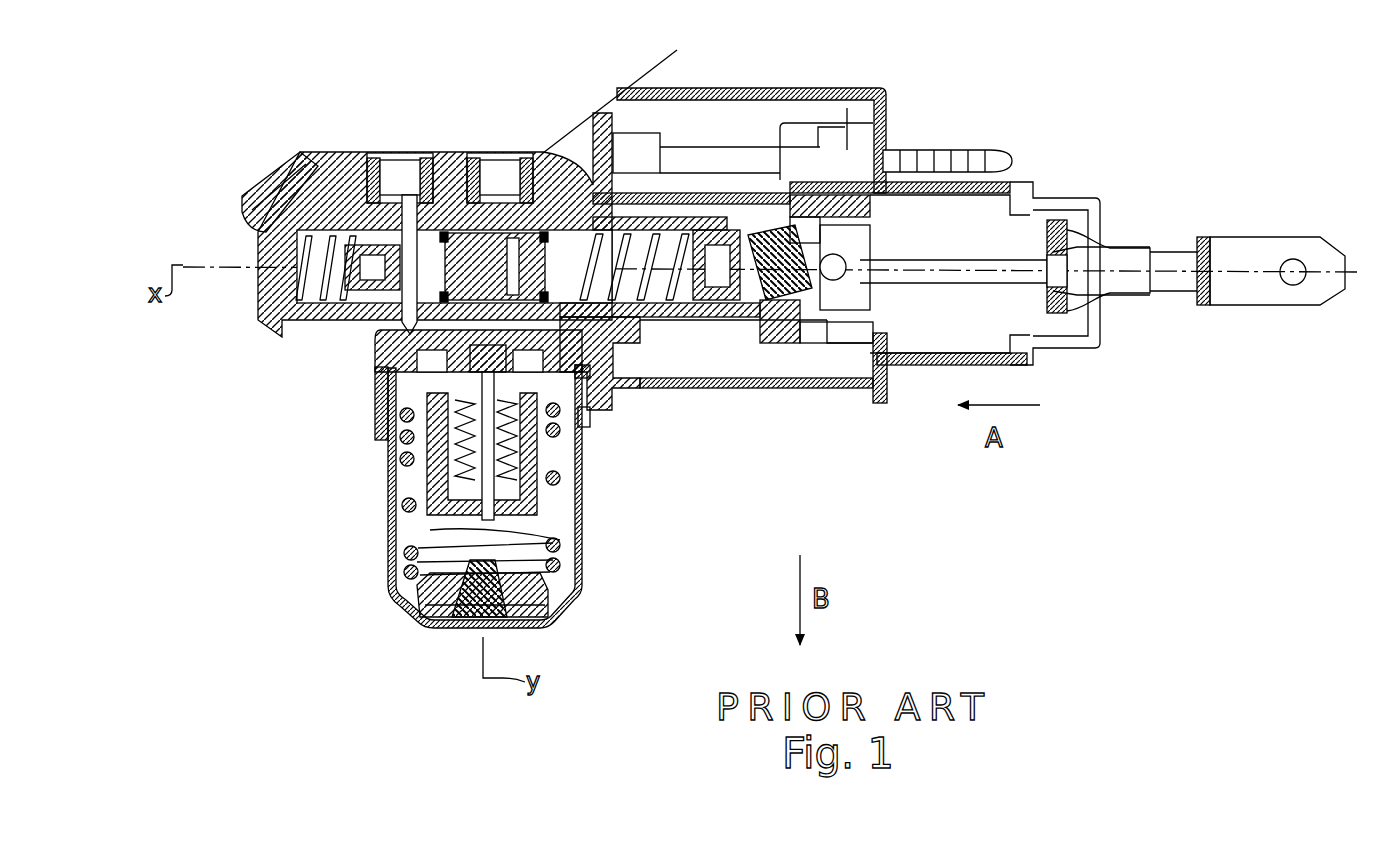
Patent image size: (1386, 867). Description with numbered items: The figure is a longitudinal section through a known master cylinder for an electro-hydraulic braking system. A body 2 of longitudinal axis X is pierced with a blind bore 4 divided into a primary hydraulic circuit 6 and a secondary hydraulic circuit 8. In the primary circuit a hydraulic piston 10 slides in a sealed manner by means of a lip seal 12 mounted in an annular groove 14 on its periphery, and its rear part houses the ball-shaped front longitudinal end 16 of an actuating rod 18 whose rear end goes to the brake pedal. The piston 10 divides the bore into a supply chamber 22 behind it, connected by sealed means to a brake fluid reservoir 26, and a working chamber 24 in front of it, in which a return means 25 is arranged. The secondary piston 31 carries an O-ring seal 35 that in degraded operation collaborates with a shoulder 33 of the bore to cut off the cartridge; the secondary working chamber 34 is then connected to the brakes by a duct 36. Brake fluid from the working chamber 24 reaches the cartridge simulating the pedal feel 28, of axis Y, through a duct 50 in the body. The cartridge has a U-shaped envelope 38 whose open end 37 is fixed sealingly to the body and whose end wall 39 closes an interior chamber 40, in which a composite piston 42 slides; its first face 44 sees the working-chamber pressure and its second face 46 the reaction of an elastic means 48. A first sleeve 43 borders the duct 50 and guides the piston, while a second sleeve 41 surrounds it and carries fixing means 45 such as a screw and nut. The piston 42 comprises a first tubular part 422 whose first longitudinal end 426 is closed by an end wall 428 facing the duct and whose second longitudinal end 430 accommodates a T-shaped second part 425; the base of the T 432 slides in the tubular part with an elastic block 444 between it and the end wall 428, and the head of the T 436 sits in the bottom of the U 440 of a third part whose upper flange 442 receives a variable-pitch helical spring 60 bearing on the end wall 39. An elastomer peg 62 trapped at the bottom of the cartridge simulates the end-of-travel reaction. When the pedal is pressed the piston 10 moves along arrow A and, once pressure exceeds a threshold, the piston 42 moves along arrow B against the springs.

The body 2 is at (728, 185).
The bore 4 is at (675, 333).
The primary hydraulic circuit 6 is at (723, 330).
The secondary hydraulic circuit 8 is at (377, 314).
The hydraulic piston 10 is at (750, 292).
The lip seal 12 is at (727, 250).
The annular groove 14 is at (748, 215).
The front longitudinal end 16 is at (822, 330).
The actuating rod 18 is at (1128, 262).
The supply chamber 22 is at (772, 292).
The working chamber 24 is at (655, 243).
The return means 25 is at (723, 355).
The brake fluid reservoir 26 is at (640, 62).
The cartridge simulating the pedal feel 28 is at (585, 530).
The secondary piston 31 is at (513, 266).
The shoulder 33 is at (528, 226).
The secondary working chamber 34 is at (314, 205).
The O-ring seal 35 is at (560, 165).
The duct 36 is at (272, 182).
The open end 37 is at (376, 363).
The envelope 38 is at (583, 592).
The end wall 39 is at (460, 627).
The interior chamber 40 is at (463, 445).
The second sleeve 41 is at (378, 410).
The piston 42 is at (417, 467).
The first sleeve 43 is at (440, 456).
The first face 44 is at (442, 515).
The fixing means 45 is at (367, 433).
The second face 46 is at (453, 212).
The elastic means 48 is at (408, 598).
The duct 50 is at (490, 236).
The helical spring 60 is at (573, 548).
The elastomer peg 62 is at (496, 625).
The first tubular part 422 is at (573, 470).
The second part 425 is at (463, 470).
The first longitudinal end 426 is at (586, 190).
The end wall 428 is at (572, 185).
The second longitudinal end 430 is at (573, 517).
The base of the T 432 is at (413, 342).
The head of the T 436 is at (407, 503).
The bottom of the U 440 is at (545, 610).
The flange 442 is at (593, 413).
The elastic block 444 is at (402, 192).